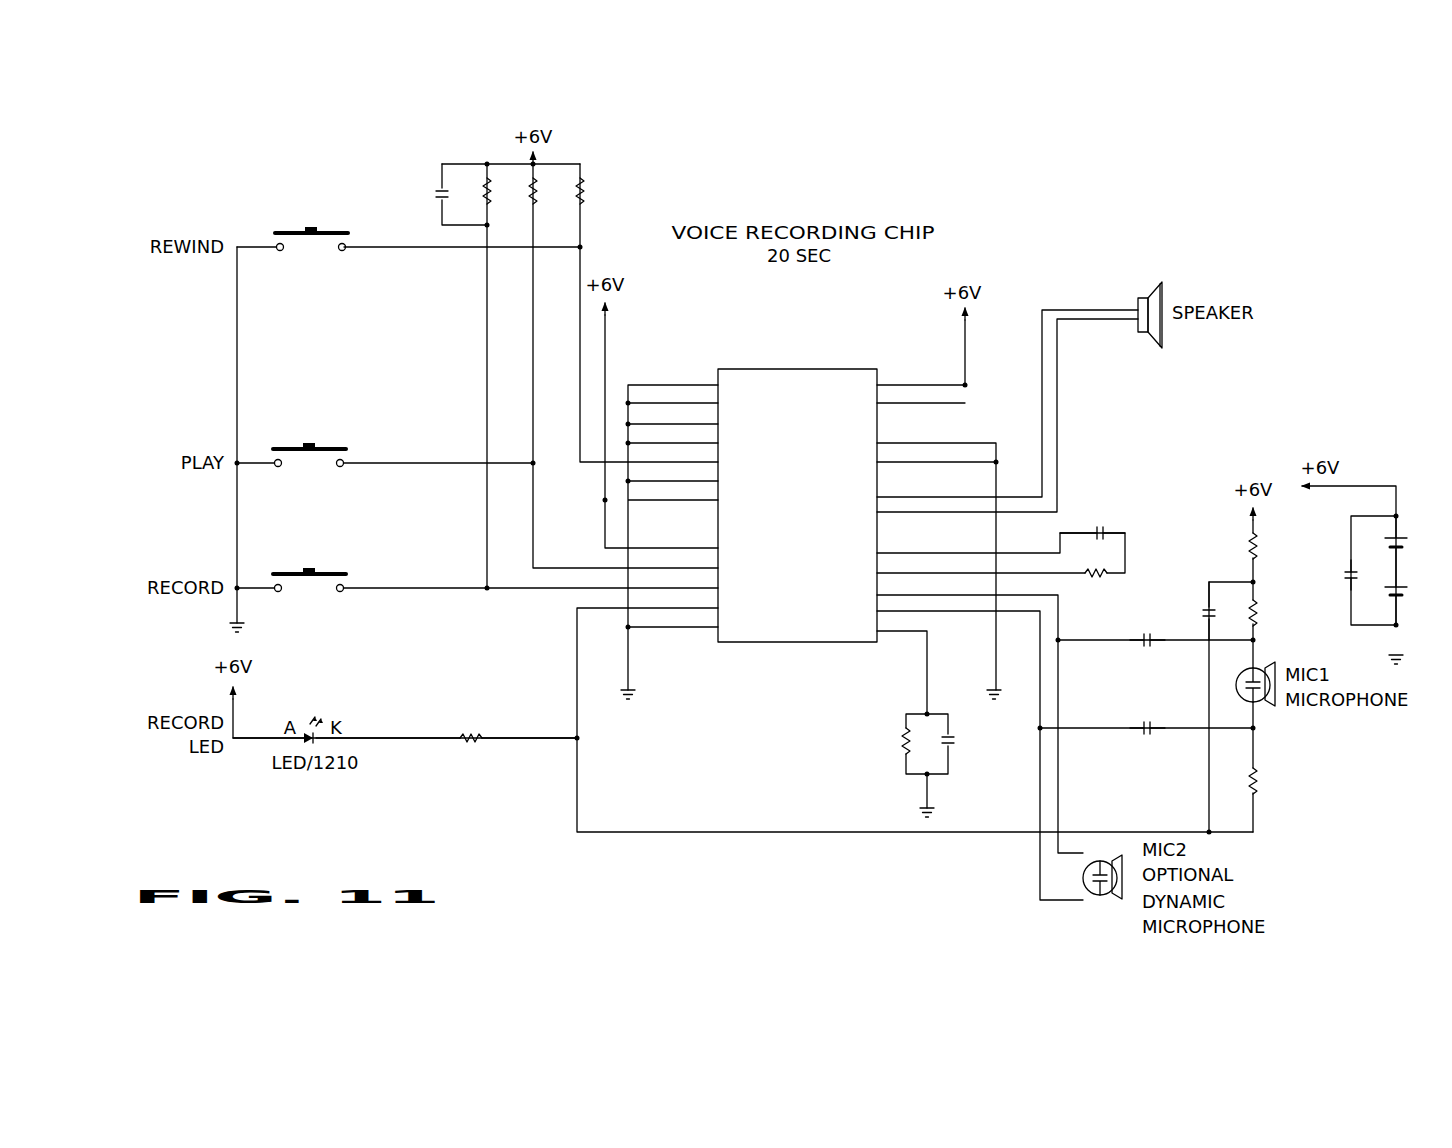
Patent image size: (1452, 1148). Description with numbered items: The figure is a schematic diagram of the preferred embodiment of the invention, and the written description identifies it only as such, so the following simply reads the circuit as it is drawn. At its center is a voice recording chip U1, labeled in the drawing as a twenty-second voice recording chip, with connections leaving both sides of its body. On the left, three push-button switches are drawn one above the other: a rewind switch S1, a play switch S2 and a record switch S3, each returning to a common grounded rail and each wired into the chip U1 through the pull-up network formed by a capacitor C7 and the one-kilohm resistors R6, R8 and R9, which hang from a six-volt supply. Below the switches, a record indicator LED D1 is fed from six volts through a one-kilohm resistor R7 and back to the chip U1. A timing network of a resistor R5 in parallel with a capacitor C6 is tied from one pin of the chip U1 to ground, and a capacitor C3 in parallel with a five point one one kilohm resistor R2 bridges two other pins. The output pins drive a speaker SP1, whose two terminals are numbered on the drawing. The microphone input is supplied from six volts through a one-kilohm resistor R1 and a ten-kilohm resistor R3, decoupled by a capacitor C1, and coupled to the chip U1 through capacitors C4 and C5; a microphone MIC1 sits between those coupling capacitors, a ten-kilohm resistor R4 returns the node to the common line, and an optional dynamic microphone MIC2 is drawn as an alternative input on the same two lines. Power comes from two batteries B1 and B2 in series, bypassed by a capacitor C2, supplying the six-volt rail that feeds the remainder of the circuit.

The rewind push-button switch S1 is at (311, 226).
The play push-button switch S2 is at (309, 442).
The record push-button switch S3 is at (309, 567).
The capacitor C7 is at (461, 194).
The 1K resistor R6 is at (502, 203).
The 1K resistor R8 is at (547, 203).
The 1K resistor R9 is at (594, 203).
The voice recording chip (20 sec) U1 is at (797, 505).
The speaker SP1 is at (1148, 302).
The capacitor C3 is at (1092, 521).
The 5.11K resistor R2 is at (1098, 573).
The 1K resistor R1 is at (1269, 545).
The 10K resistor R3 is at (1275, 615).
The capacitor C1 is at (1195, 611).
The coupling capacitor C4 is at (1147, 628).
The coupling capacitor C5 is at (1147, 716).
The microphone MIC1 is at (1283, 684).
The 10K resistor R4 is at (1274, 777).
The optional dynamic microphone MIC2 is at (1135, 869).
The battery bypass capacitor C2 is at (1336, 575).
The battery B1 is at (1411, 551).
The battery B2 is at (1411, 596).
The record LED (LED/1210) D1 is at (317, 717).
The 1K resistor R7 is at (473, 740).
The resistor R5 is at (908, 744).
The capacitor C6 is at (965, 741).